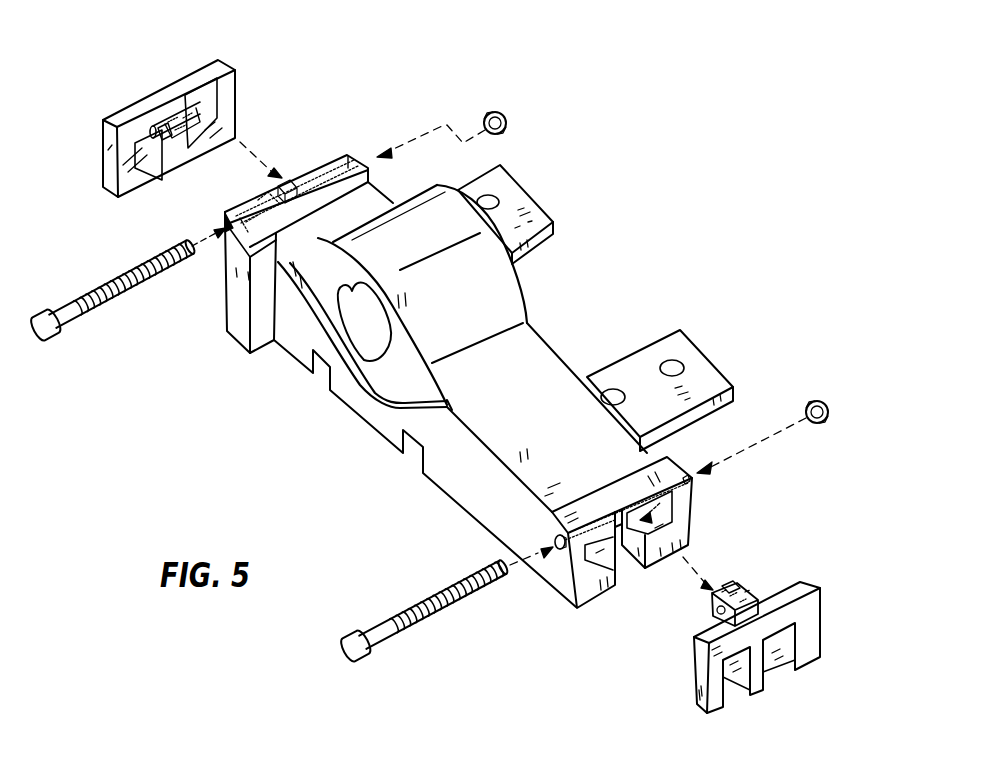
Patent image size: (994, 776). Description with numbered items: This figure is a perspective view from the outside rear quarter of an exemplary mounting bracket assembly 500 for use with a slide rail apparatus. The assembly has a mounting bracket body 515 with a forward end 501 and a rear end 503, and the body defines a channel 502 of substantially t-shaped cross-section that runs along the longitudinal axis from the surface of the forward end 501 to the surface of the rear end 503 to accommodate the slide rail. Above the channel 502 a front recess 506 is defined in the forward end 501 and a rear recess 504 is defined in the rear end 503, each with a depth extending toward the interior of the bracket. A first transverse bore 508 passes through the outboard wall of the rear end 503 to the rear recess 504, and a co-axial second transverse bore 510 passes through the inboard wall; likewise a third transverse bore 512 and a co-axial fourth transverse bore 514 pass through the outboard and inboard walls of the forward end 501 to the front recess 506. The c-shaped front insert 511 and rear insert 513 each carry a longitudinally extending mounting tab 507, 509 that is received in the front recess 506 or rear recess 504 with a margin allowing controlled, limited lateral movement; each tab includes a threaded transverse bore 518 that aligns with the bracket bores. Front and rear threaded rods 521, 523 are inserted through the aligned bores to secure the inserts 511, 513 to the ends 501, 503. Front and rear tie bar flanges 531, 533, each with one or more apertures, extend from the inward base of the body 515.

The mounting bracket assembly 500 is at (638, 233).
The forward end 501 is at (362, 168).
The channel 502 is at (625, 565).
The rear end 503 is at (700, 507).
The rear recess 504 is at (627, 507).
The front recess 506 is at (276, 186).
The mounting tab 507 is at (203, 112).
The first transverse bore 508 is at (554, 539).
The mounting tab 509 is at (717, 592).
The second transverse bore 510 is at (673, 478).
The front insert 511 is at (133, 110).
The third transverse bore 512 is at (220, 227).
The rear insert 513 is at (808, 610).
The fourth transverse bore 514 is at (355, 150).
The mounting bracket body 515 is at (378, 417).
The threaded transverse bore 518 is at (200, 108).
The front threaded rod 521 is at (142, 285).
The rear threaded rod 523 is at (427, 597).
The front tie bar flange 531 is at (498, 182).
The rear tie bar flange 533 is at (643, 368).